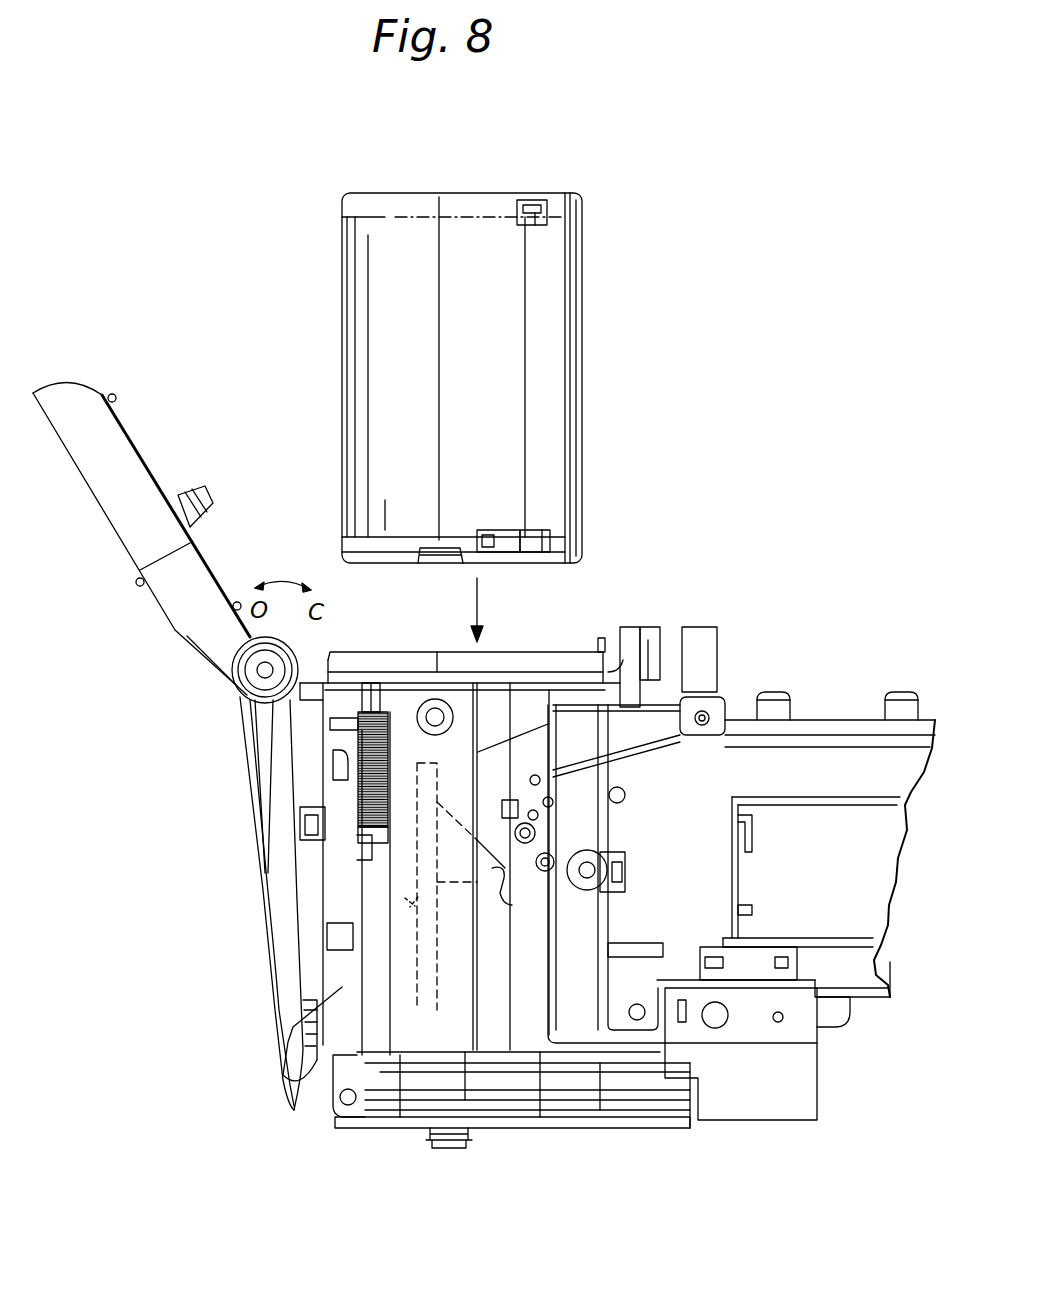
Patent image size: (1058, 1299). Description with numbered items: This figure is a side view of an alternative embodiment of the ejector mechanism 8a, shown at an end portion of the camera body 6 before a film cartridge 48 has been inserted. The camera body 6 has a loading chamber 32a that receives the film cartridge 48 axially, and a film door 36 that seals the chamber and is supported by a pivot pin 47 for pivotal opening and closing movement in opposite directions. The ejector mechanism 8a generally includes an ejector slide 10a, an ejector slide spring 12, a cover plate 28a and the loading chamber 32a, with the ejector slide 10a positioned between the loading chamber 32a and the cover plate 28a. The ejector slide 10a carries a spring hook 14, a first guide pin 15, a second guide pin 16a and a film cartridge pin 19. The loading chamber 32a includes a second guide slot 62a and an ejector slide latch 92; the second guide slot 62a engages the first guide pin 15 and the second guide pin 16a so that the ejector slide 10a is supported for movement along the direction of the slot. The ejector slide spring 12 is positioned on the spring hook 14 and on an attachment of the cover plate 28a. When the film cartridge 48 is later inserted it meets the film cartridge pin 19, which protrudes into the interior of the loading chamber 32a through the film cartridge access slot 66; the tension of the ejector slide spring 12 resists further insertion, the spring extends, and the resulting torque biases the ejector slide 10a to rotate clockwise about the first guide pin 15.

The film cartridge 48 is at (592, 362).
The film door 36 is at (113, 473).
The pivot pin 47 is at (243, 673).
The camera body 6 is at (810, 645).
The ejector slide spring 12 is at (358, 795).
The spring hook 14 is at (357, 852).
The first guide pin 15 is at (424, 828).
The ejector slide 10a is at (403, 862).
The second guide pin 16a is at (418, 914).
The film cartridge pin 19 is at (504, 907).
The ejector mechanism 8a is at (225, 1013).
The loading chamber 32a is at (275, 1065).
The second guide slot 62a is at (427, 1005).
The ejector slide latch 92 is at (425, 997).
The cover plate 28a is at (448, 1010).
The film cartridge access slot 66 is at (498, 972).